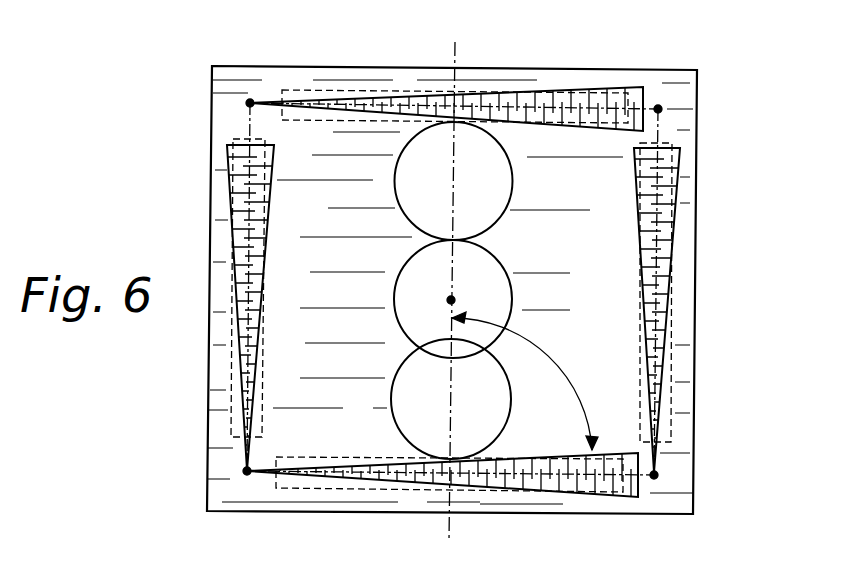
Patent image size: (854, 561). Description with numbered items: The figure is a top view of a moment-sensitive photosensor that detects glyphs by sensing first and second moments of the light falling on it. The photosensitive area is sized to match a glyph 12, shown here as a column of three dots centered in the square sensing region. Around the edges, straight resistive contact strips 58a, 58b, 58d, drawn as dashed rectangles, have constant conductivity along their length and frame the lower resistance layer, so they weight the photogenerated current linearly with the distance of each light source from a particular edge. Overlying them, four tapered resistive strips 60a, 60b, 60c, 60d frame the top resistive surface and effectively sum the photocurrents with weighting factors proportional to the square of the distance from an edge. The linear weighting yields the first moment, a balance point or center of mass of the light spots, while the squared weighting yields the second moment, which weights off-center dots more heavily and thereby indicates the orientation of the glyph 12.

The glyph 12 is at (513, 179).
The straight resistive contact strip 58a is at (231, 396).
The straight resistive contact strip 58b is at (671, 398).
The straight resistive contact strip 58d is at (323, 90).
The tapered resistive strip 60a is at (228, 185).
The tapered resistive strip 60b is at (600, 497).
The tapered resistive strip 60c is at (680, 187).
The tapered resistive strip 60d is at (597, 87).